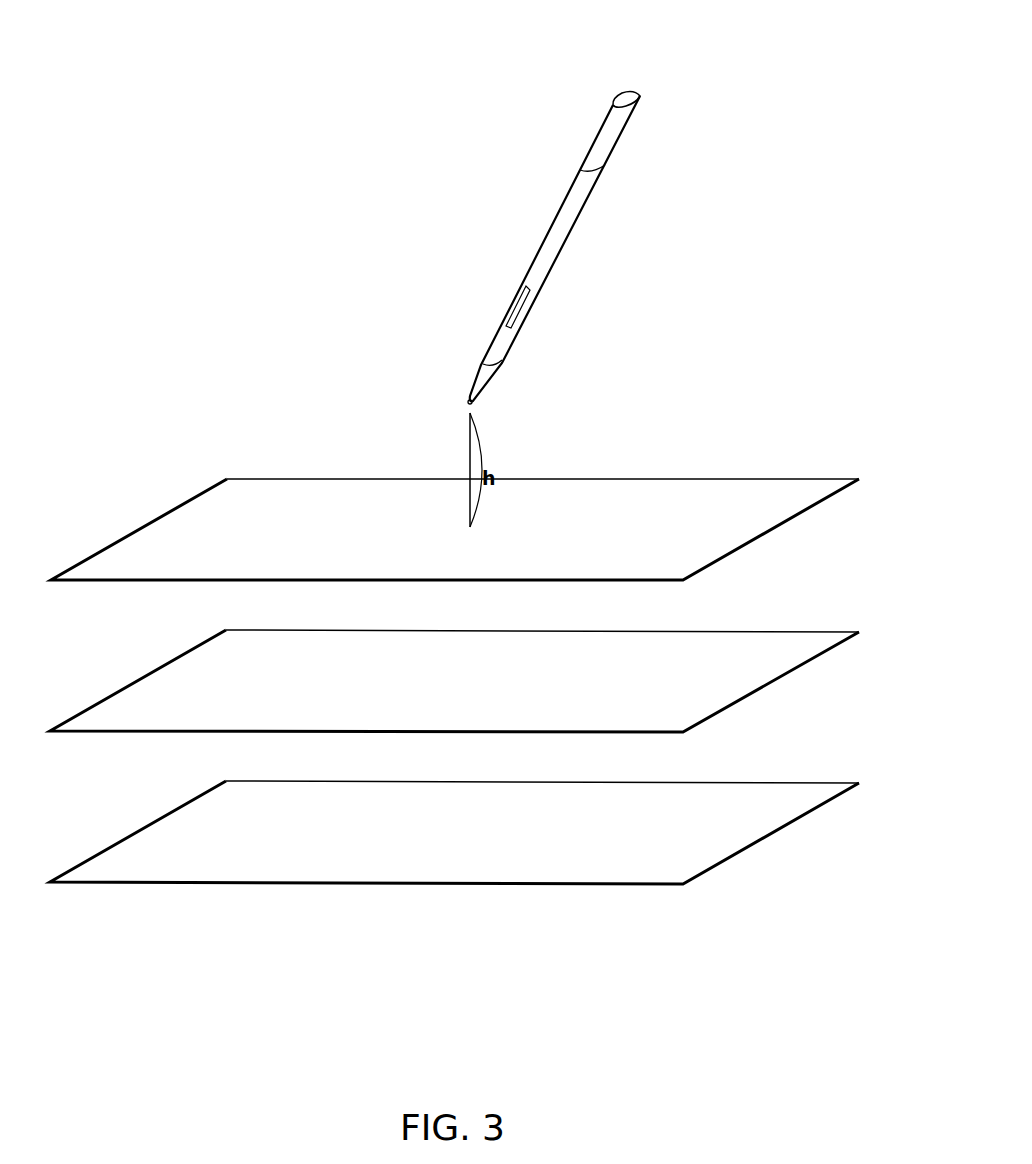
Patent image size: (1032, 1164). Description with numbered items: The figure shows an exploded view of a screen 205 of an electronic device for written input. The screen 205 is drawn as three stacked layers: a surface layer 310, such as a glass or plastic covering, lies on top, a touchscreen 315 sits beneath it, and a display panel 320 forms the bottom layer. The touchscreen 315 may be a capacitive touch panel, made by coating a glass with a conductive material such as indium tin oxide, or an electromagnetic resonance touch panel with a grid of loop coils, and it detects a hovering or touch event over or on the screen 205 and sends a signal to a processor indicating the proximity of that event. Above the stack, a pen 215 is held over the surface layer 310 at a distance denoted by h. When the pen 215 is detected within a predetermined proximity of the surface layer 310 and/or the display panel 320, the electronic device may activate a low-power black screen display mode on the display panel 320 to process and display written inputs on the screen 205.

The screen 205 is at (862, 84).
The pen 215 is at (646, 86).
The surface layer 310 is at (866, 472).
The touchscreen 315 is at (866, 624).
The display panel 320 is at (866, 775).